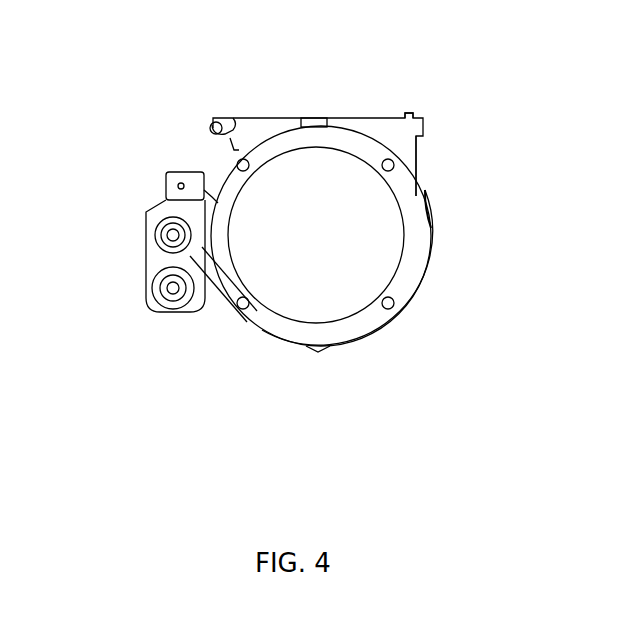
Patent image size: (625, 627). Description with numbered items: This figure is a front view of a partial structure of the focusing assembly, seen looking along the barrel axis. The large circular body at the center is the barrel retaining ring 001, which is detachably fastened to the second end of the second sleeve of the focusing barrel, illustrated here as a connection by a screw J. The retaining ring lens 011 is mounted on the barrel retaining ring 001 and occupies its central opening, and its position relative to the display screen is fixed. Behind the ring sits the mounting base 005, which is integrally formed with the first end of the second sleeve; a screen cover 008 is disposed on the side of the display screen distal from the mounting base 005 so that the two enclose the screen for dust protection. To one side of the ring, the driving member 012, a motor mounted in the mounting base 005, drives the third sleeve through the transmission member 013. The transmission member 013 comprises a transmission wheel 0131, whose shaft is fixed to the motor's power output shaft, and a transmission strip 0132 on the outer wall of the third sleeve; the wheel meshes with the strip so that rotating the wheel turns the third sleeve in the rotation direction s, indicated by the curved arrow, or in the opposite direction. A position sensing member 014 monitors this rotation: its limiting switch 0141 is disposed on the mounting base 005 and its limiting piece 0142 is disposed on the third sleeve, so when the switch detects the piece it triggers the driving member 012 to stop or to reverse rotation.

The barrel retaining ring 001 is at (415, 236).
The mounting base 005 is at (393, 143).
The screen cover 008 is at (413, 115).
The retaining ring lens 011 is at (345, 187).
The driving member 012 is at (150, 290).
The transmission member 013 is at (173, 321).
The transmission wheel 0131 is at (168, 255).
The transmission strip 0132 is at (248, 330).
The position sensing member 014 is at (230, 72).
The limiting switch 0141 is at (177, 175).
The limiting piece 0142 is at (212, 197).
The screw J is at (394, 308).
The rotation direction s is at (127, 73).